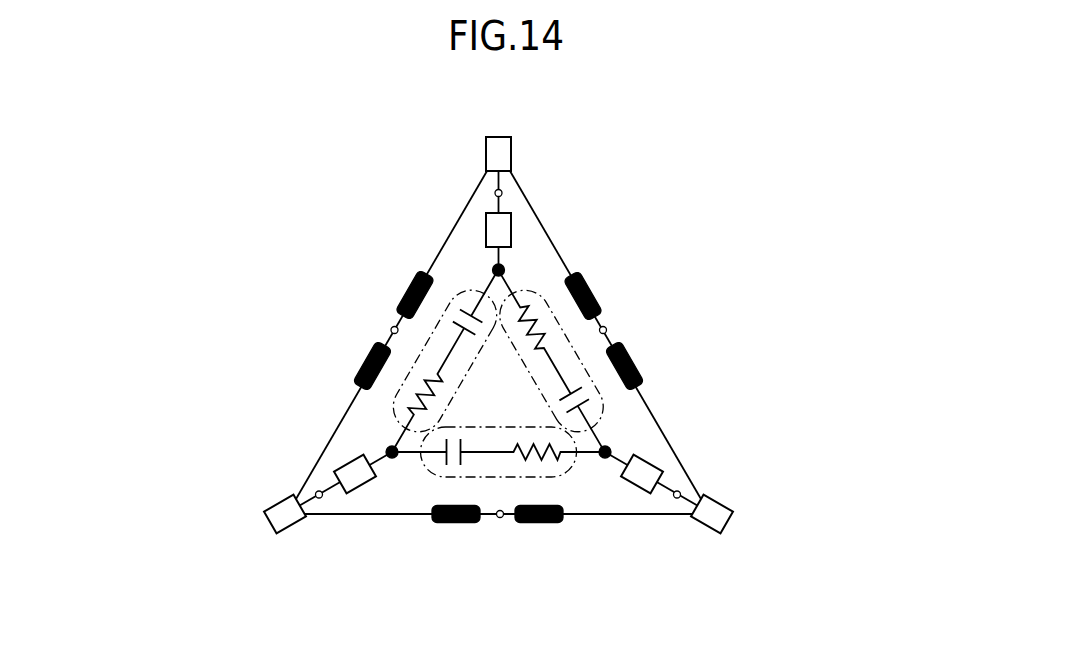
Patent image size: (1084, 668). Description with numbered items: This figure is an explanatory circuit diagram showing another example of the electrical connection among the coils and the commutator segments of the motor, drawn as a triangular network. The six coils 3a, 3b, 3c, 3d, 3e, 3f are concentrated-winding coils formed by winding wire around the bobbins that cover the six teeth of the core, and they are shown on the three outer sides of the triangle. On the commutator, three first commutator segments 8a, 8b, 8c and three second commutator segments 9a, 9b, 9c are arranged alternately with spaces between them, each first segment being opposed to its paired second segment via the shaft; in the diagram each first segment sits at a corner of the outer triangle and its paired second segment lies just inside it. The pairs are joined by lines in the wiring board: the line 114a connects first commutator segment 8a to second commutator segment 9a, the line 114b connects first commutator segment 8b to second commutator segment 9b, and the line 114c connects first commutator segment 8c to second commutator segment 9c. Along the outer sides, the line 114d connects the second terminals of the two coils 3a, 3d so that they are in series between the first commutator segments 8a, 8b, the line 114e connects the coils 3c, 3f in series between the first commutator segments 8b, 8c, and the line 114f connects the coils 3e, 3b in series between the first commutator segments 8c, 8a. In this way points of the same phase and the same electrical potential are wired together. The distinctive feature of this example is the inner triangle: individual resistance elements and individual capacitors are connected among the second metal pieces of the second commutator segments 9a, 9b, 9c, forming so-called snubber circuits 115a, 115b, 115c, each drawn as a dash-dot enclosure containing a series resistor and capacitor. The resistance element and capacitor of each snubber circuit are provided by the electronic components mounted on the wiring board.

The coil 3a is at (399, 291).
The coil 3b is at (600, 287).
The coil 3c is at (445, 524).
The coil 3d is at (358, 364).
The coil 3e is at (641, 374).
The coil 3f is at (540, 524).
The first commutator segment 8a is at (498, 136).
The first commutator segment 8b is at (270, 503).
The first commutator segment 8c is at (728, 503).
The second commutator segment 9a is at (512, 229).
The second commutator segment 9b is at (340, 466).
The second commutator segment 9c is at (660, 466).
The line 114a is at (503, 193).
The line 114b is at (321, 498).
The line 114c is at (678, 498).
The line 114d is at (391, 329).
The line 114e is at (500, 519).
The line 114f is at (607, 330).
The snubber circuit 115a is at (468, 292).
The snubber circuit 115b is at (575, 464).
The snubber circuit 115c is at (523, 293).